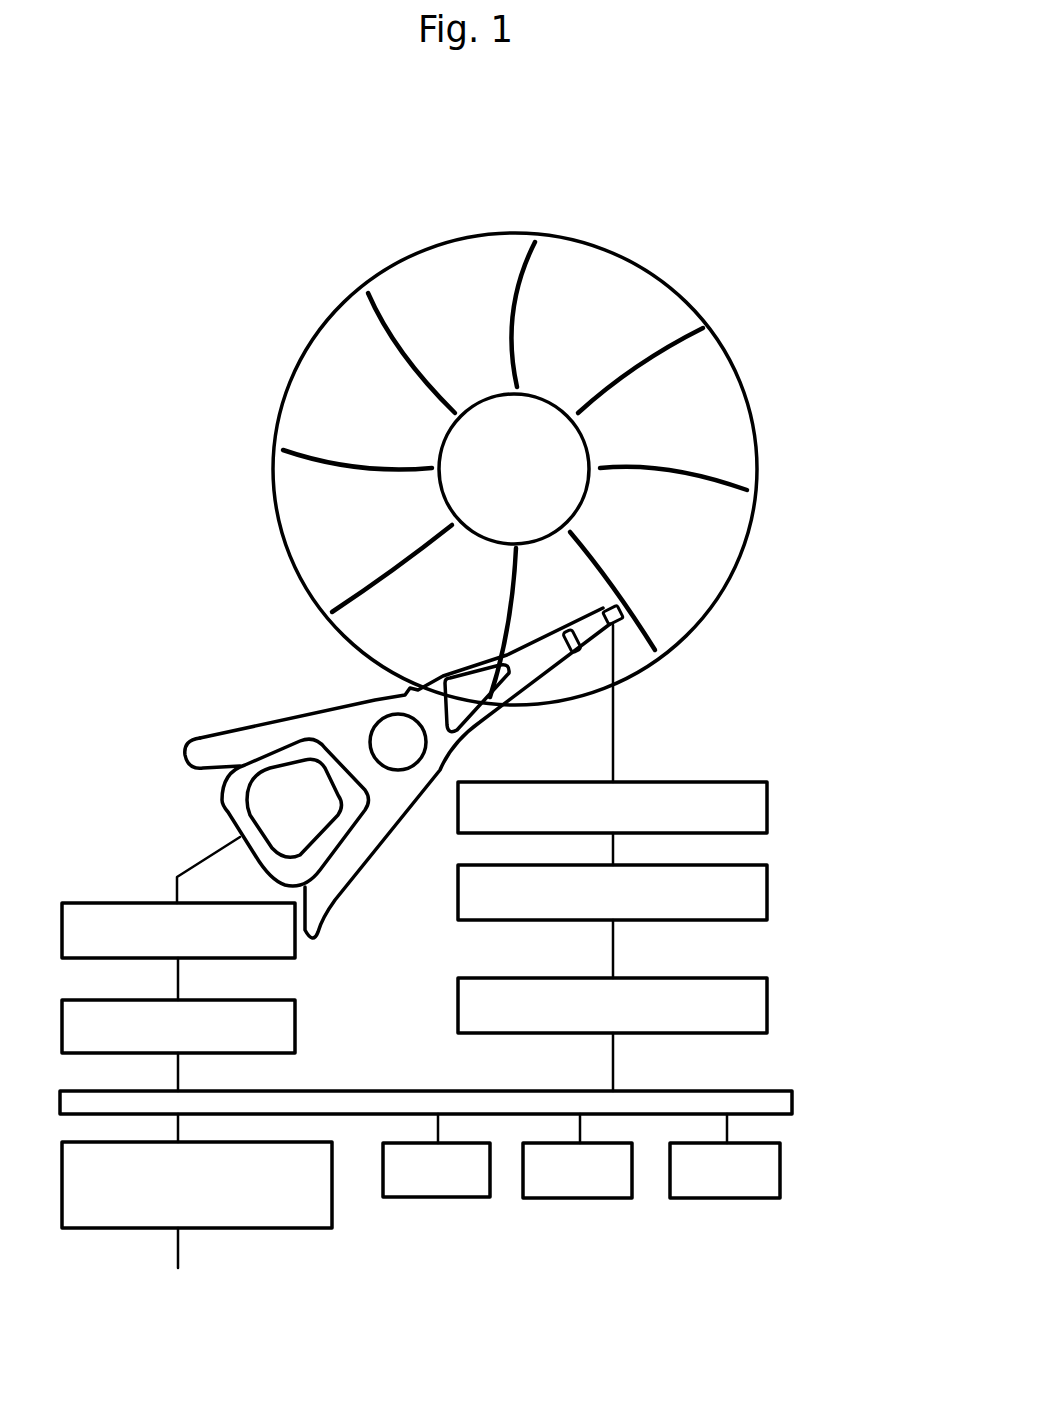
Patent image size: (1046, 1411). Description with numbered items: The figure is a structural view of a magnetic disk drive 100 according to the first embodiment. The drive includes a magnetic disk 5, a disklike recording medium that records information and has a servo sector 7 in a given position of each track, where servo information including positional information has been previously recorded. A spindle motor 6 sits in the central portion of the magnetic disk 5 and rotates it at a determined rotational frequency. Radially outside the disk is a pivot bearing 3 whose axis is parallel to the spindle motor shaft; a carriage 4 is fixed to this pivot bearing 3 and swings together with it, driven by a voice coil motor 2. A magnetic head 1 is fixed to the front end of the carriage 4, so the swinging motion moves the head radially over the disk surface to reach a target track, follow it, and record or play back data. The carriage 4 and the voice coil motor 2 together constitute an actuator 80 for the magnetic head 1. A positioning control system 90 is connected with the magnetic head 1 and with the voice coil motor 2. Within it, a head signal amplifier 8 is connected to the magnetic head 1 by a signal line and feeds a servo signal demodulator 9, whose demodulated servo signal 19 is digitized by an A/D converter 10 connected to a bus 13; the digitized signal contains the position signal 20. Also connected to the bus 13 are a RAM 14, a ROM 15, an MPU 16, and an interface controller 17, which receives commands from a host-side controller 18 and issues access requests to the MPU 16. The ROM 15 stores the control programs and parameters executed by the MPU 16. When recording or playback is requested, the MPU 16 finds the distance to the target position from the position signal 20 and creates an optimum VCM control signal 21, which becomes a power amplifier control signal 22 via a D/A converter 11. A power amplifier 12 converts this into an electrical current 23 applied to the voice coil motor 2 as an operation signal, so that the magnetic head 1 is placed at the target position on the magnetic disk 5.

The magnetic head 1 is at (606, 608).
The voice coil motor 2 is at (288, 746).
The pivot bearing 3 is at (380, 718).
The carriage 4 is at (460, 741).
The magnetic disk 5 is at (742, 387).
The spindle motor 6 is at (445, 437).
The servo sector 7 is at (703, 482).
The head signal amplifier 8 is at (767, 808).
The servo signal demodulator 9 is at (767, 893).
The A/D converter 10 is at (767, 1006).
The D/A converter 11 is at (295, 1027).
The power amplifier 12 is at (295, 948).
The bus 13 is at (792, 1102).
The RAM 14 is at (737, 1198).
The ROM 15 is at (580, 1198).
The MPU 16 is at (445, 1198).
The interface controller 17 is at (332, 1200).
The host-side controller 18 is at (335, 1293).
The demodulated servo signal 19 is at (613, 948).
The position signal 20 is at (613, 1060).
The VCM control signal 21 is at (178, 1070).
The power amplifier control signal 22 is at (178, 975).
The electrical current 23 is at (203, 858).
The actuator 80 is at (214, 726).
The positioning control system 90 is at (764, 728).
The magnetic disk drive 100 is at (729, 286).